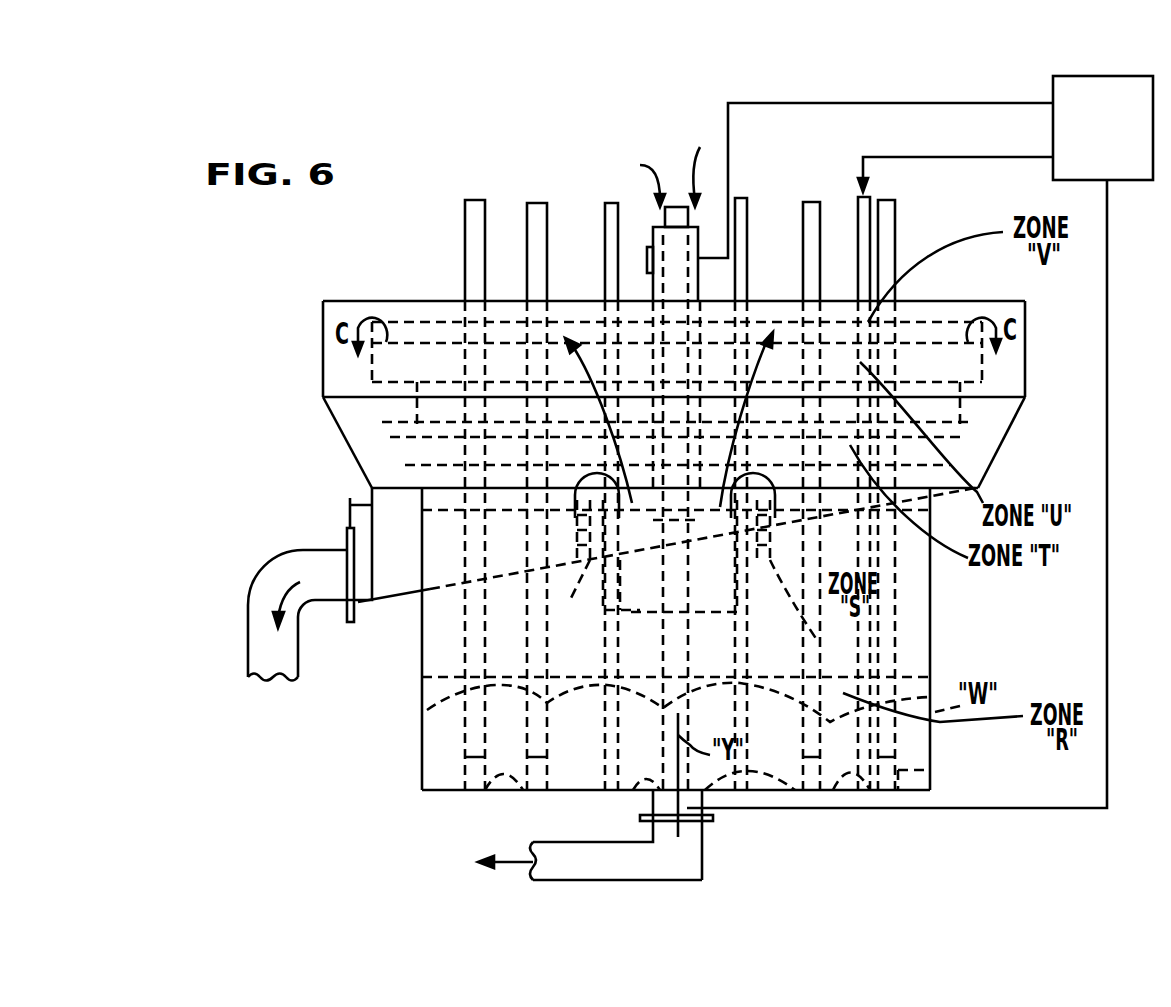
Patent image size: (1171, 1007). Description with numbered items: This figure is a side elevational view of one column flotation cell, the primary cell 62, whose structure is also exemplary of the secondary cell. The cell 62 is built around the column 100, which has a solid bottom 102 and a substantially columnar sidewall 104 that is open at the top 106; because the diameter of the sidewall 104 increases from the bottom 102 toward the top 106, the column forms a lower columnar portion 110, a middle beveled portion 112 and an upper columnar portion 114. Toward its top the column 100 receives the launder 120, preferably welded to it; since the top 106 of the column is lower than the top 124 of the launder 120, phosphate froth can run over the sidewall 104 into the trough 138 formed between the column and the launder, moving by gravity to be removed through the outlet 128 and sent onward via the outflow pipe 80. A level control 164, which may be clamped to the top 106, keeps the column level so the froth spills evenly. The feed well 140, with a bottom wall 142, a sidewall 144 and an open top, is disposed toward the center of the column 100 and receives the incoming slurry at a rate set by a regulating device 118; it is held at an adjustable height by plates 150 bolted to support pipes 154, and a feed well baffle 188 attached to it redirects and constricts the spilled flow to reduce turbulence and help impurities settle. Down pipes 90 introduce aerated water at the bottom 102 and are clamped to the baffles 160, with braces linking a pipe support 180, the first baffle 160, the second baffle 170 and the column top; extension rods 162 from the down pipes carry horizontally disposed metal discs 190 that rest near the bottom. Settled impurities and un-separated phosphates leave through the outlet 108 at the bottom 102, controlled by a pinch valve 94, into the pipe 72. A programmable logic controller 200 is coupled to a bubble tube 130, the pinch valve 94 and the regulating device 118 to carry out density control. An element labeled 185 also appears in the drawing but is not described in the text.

The primary cell 62 is at (890, 78).
The pipe 72 is at (685, 865).
The outflow pipe 80 is at (248, 625).
The down pipes 90 is at (482, 208).
The pinch valve 94 is at (697, 798).
The column 100 is at (944, 657).
The bottom 102 is at (855, 792).
The sidewall 104 is at (930, 748).
The top 106 is at (916, 320).
The outlet 108 is at (655, 803).
The lower columnar portion 110 is at (930, 598).
The middle beveled portion 112 is at (955, 471).
The upper columnar portion 114 is at (980, 363).
The regulating device 118 is at (647, 250).
The launder 120 is at (1002, 434).
The top of the launder 124 is at (343, 305).
The outlet 128 is at (358, 605).
The bubble tube 130 is at (834, 328).
The trough 138 is at (375, 447).
The feed well 140 is at (618, 614).
The bottom wall 142 is at (648, 630).
The sidewall 144 is at (742, 614).
The plates 150 is at (548, 604).
The support pipes 154 is at (466, 506).
The first baffle 160 is at (548, 372).
The extension rods 162 is at (930, 780).
The level control 164 is at (772, 320).
The second baffle 170 is at (445, 372).
The pipe support 180 is at (745, 415).
The plate 185 is at (868, 452).
The feed well baffle 188 is at (578, 488).
The metal discs 190 is at (678, 759).
The PLC control interface 200 is at (920, 442).